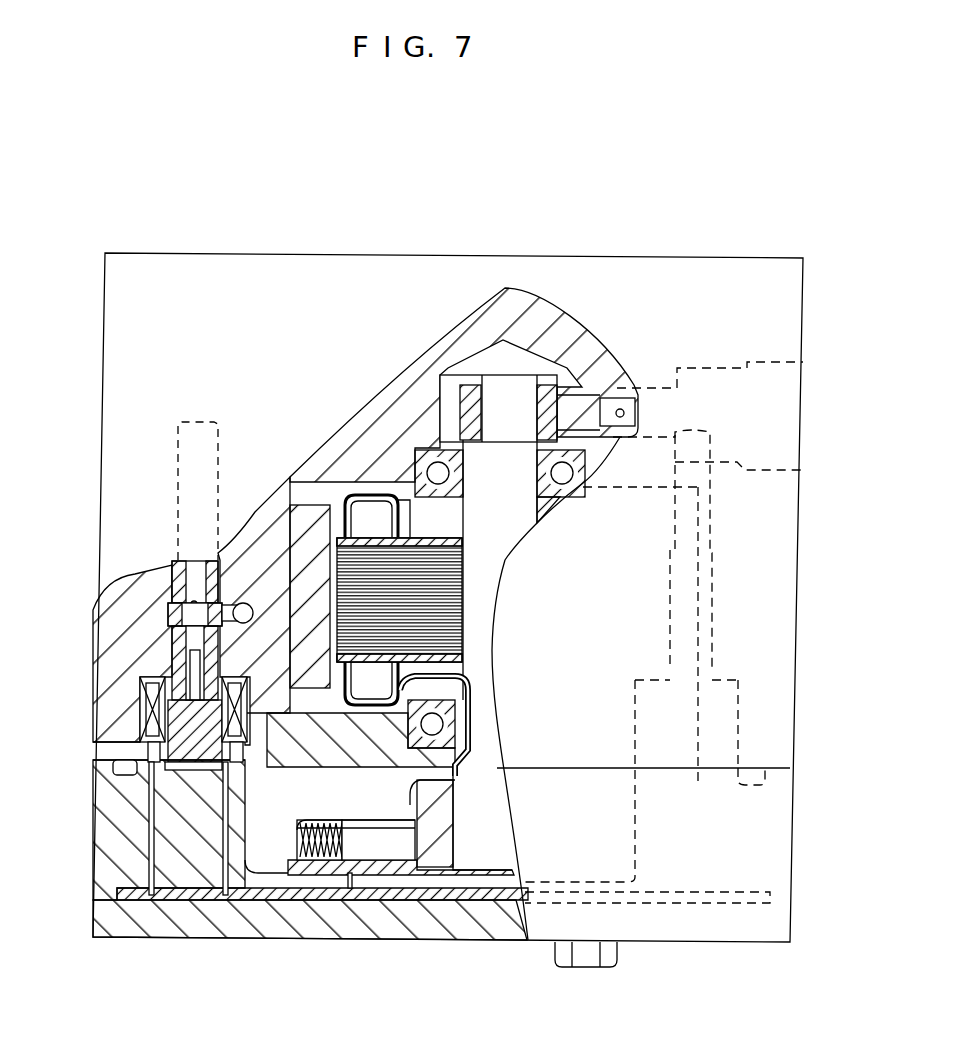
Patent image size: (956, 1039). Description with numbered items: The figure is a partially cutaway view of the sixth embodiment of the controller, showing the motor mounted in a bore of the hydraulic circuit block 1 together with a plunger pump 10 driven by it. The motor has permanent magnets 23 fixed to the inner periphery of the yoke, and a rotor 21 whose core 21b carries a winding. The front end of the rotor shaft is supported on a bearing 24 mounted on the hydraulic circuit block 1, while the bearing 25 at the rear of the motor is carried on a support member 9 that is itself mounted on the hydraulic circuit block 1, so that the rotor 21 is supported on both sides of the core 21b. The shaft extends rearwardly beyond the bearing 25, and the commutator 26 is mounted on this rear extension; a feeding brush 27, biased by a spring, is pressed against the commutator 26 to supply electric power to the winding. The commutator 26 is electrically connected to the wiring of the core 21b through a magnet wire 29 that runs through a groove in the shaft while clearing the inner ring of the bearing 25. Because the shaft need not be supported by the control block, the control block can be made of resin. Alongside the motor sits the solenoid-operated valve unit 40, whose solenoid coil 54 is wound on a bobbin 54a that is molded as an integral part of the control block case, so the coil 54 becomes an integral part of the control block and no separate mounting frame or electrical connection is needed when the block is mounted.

The hydraulic circuit block 1 is at (742, 250).
The support member 9 is at (289, 763).
The plunger pump 10 is at (651, 382).
The rotor 21 is at (345, 495).
The core 21b is at (462, 598).
The permanent magnets 23 is at (310, 537).
The bearing 24 is at (437, 448).
The bearing 25 is at (456, 768).
The commutator 26 is at (433, 832).
The feeding brush 27 is at (367, 845).
The magnet wire 29 is at (468, 720).
The solenoid valve 40 is at (160, 657).
The solenoid coil 54 is at (142, 740).
The bobbin 54a is at (150, 718).